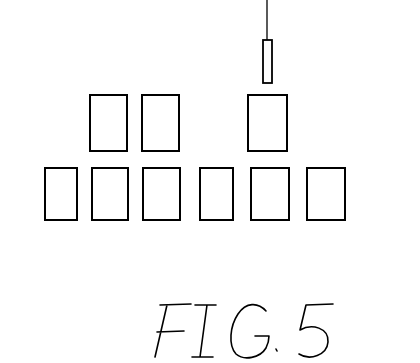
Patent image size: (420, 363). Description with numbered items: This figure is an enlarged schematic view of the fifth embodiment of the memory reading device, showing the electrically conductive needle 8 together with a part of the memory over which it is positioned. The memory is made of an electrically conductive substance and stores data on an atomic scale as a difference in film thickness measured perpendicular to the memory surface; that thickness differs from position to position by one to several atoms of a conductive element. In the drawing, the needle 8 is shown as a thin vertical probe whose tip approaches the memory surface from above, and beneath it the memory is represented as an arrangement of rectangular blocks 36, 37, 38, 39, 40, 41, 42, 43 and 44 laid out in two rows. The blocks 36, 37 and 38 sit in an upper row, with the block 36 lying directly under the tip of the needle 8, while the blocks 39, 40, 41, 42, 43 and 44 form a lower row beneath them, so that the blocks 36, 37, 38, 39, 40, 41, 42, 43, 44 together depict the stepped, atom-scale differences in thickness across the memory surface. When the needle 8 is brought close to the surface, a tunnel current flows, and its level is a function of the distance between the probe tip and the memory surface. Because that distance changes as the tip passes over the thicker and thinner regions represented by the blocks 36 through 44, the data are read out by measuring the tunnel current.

The electrically conductive needle 8 is at (272, 60).
The block 36 is at (288, 118).
The block 37 is at (154, 98).
The block 38 is at (104, 94).
The block 39 is at (328, 221).
The block 40 is at (273, 221).
The block 41 is at (216, 221).
The block 42 is at (164, 221).
The block 43 is at (113, 221).
The block 44 is at (63, 221).